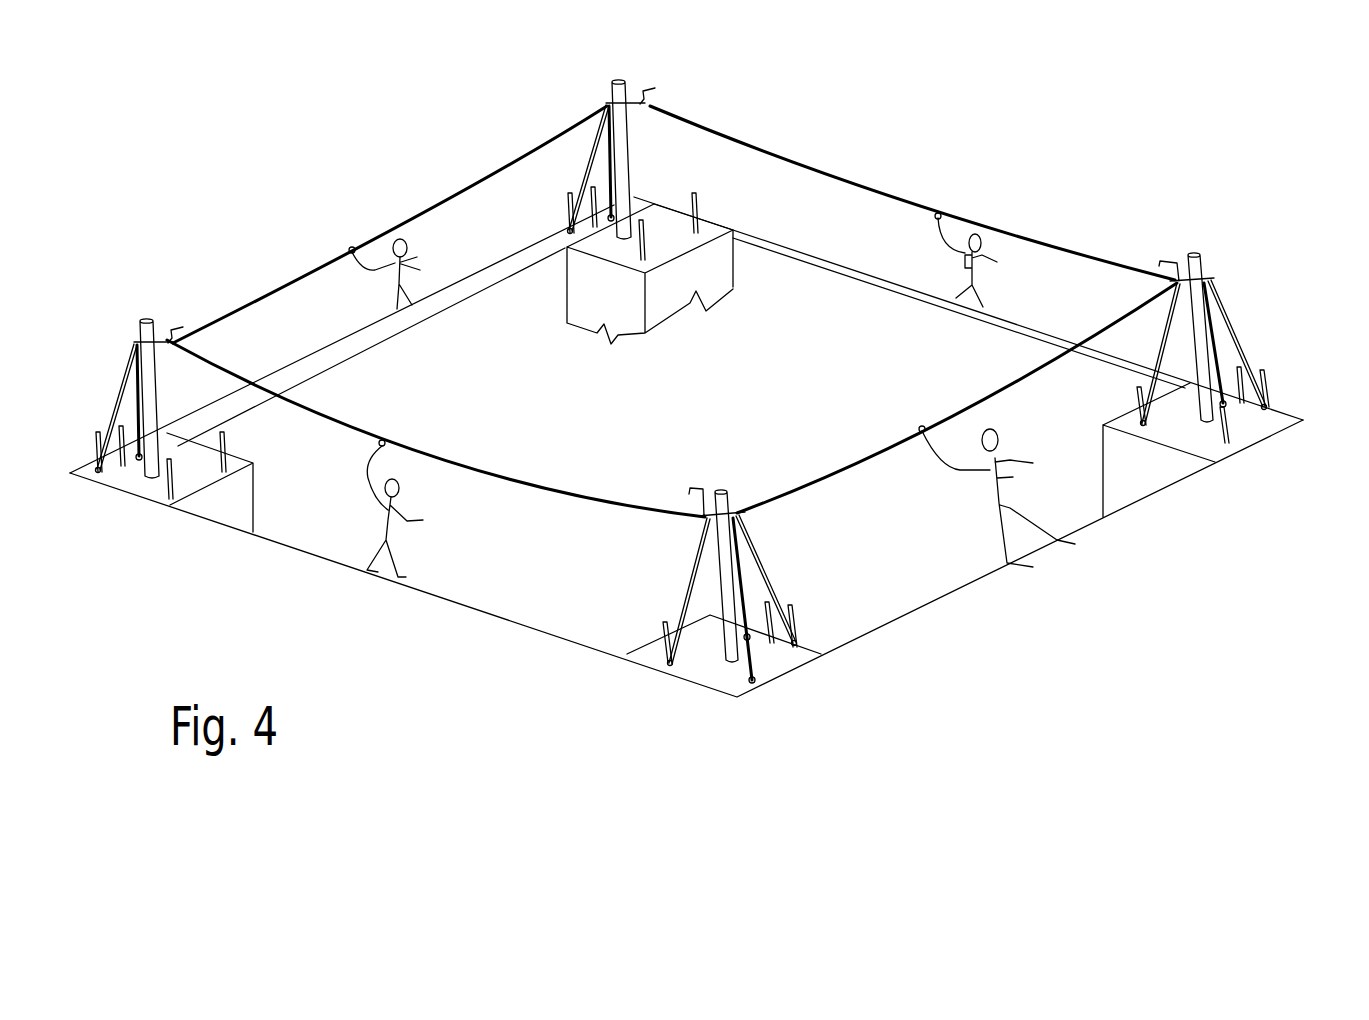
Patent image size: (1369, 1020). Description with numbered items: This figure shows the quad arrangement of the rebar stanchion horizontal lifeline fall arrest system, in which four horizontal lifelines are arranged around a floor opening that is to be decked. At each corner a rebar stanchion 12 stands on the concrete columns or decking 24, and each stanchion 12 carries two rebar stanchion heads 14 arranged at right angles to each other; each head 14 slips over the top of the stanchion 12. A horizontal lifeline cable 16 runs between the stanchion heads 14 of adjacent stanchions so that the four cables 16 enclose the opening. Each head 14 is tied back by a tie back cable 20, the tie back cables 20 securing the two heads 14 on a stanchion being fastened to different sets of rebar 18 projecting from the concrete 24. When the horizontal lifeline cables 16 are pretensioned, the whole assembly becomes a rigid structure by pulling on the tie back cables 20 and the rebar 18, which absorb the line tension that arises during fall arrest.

The rebar stanchion 12 is at (630, 155).
The rebar stanchion head 14 is at (608, 102).
The horizontal lifeline cable assembly 16 is at (852, 177).
The rebar 18 is at (165, 495).
The tie back cable 20 is at (590, 158).
The concrete columns or decking 24 is at (240, 500).